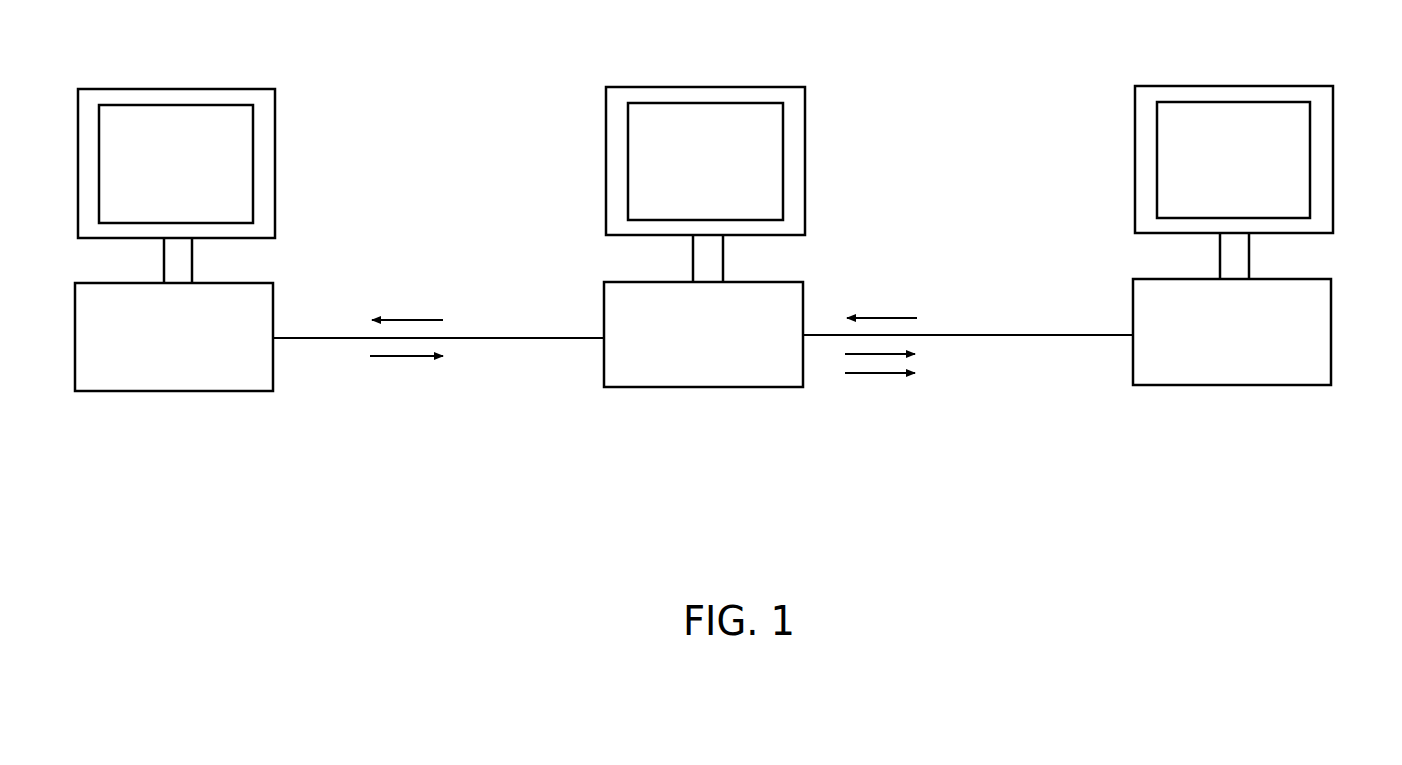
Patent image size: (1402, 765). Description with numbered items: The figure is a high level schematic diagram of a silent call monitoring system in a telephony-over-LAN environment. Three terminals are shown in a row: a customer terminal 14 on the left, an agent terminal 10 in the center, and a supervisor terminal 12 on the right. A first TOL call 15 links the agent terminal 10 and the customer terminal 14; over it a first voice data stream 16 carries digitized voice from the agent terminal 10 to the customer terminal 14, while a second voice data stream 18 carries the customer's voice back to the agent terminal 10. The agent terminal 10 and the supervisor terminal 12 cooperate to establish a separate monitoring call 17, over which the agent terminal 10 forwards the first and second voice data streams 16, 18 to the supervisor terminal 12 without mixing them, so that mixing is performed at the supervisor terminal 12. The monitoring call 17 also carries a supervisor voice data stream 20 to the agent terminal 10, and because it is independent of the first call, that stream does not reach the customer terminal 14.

The agent terminal 10 is at (803, 282).
The supervisor terminal 12 is at (1331, 279).
The customer terminal 14 is at (273, 283).
The first TOL call 15 is at (518, 338).
The first voice data stream 16 is at (415, 320).
The monitoring call 17 is at (1030, 335).
The second voice data stream 18 is at (408, 356).
The supervisor voice data stream 20 is at (890, 318).